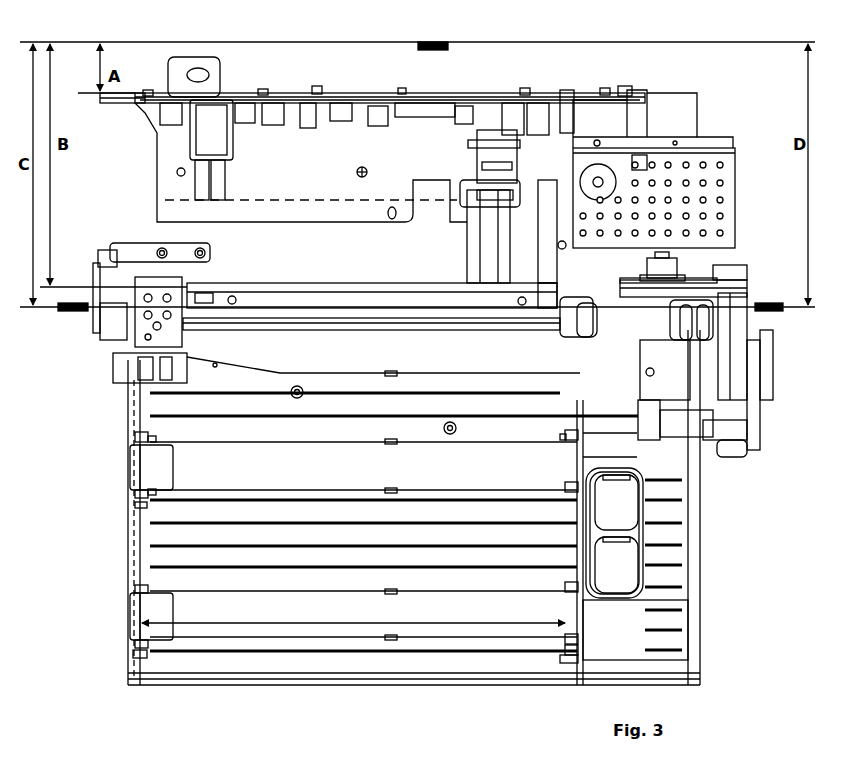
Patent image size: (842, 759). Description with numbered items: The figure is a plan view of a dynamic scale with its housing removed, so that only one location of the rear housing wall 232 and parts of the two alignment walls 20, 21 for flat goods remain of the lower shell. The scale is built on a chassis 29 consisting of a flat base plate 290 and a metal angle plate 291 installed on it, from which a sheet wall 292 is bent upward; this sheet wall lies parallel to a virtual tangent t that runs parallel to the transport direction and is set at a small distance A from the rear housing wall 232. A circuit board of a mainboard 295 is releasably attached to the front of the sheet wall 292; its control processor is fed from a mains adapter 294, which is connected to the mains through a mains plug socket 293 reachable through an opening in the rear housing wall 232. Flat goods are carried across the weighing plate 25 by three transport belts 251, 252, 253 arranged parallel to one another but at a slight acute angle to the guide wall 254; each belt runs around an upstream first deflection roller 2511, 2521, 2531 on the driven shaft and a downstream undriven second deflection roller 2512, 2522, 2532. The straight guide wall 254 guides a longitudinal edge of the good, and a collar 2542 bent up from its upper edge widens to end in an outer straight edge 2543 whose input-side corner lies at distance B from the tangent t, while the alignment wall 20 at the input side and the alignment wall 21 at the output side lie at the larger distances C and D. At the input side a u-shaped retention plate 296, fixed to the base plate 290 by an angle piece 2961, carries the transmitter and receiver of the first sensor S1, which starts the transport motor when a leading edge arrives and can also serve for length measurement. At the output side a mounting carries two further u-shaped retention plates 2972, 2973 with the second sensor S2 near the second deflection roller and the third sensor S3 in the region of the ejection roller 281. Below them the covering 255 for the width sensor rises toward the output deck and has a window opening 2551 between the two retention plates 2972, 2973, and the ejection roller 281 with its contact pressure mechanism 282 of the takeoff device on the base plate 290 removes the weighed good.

The alignment wall 20 is at (72, 312).
The alignment wall 21 is at (757, 303).
The weighing plate 25 is at (540, 407).
The chassis 29 is at (128, 138).
The rear housing wall 232 is at (437, 43).
The transport belt 251 is at (320, 353).
The transport belt 252 is at (152, 465).
The transport belt 253 is at (152, 613).
The guide wall 254 is at (280, 313).
The covering 255 is at (667, 600).
The ejection roller 281 is at (752, 385).
The contact pressure mechanism 282 is at (712, 352).
The flat base plate 290 is at (157, 233).
The metal angle plate 291 is at (173, 143).
The sheet wall 292 is at (250, 93).
The mains plug socket 293 is at (208, 117).
The mains adapter 294 is at (720, 163).
The mainboard 295 is at (555, 305).
The retention plate 296 is at (100, 327).
The first deflection roller 2511 is at (118, 370).
The second deflection roller 2512 is at (720, 468).
The first deflection roller 2521 is at (132, 497).
The second deflection roller 2522 is at (580, 500).
The first deflection roller 2531 is at (128, 655).
The second deflection roller 2532 is at (573, 645).
The collar 2542 is at (318, 287).
The outer straight edge 2543 is at (568, 305).
The window opening 2551 is at (643, 508).
The angle piece 2961 is at (182, 257).
The retention plate 2972 is at (568, 310).
The retention plate 2973 is at (688, 318).
The first sensor S1 is at (112, 370).
The second sensor S2 is at (587, 317).
The third sensor S3 is at (712, 278).
The virtual tangent t is at (730, 42).